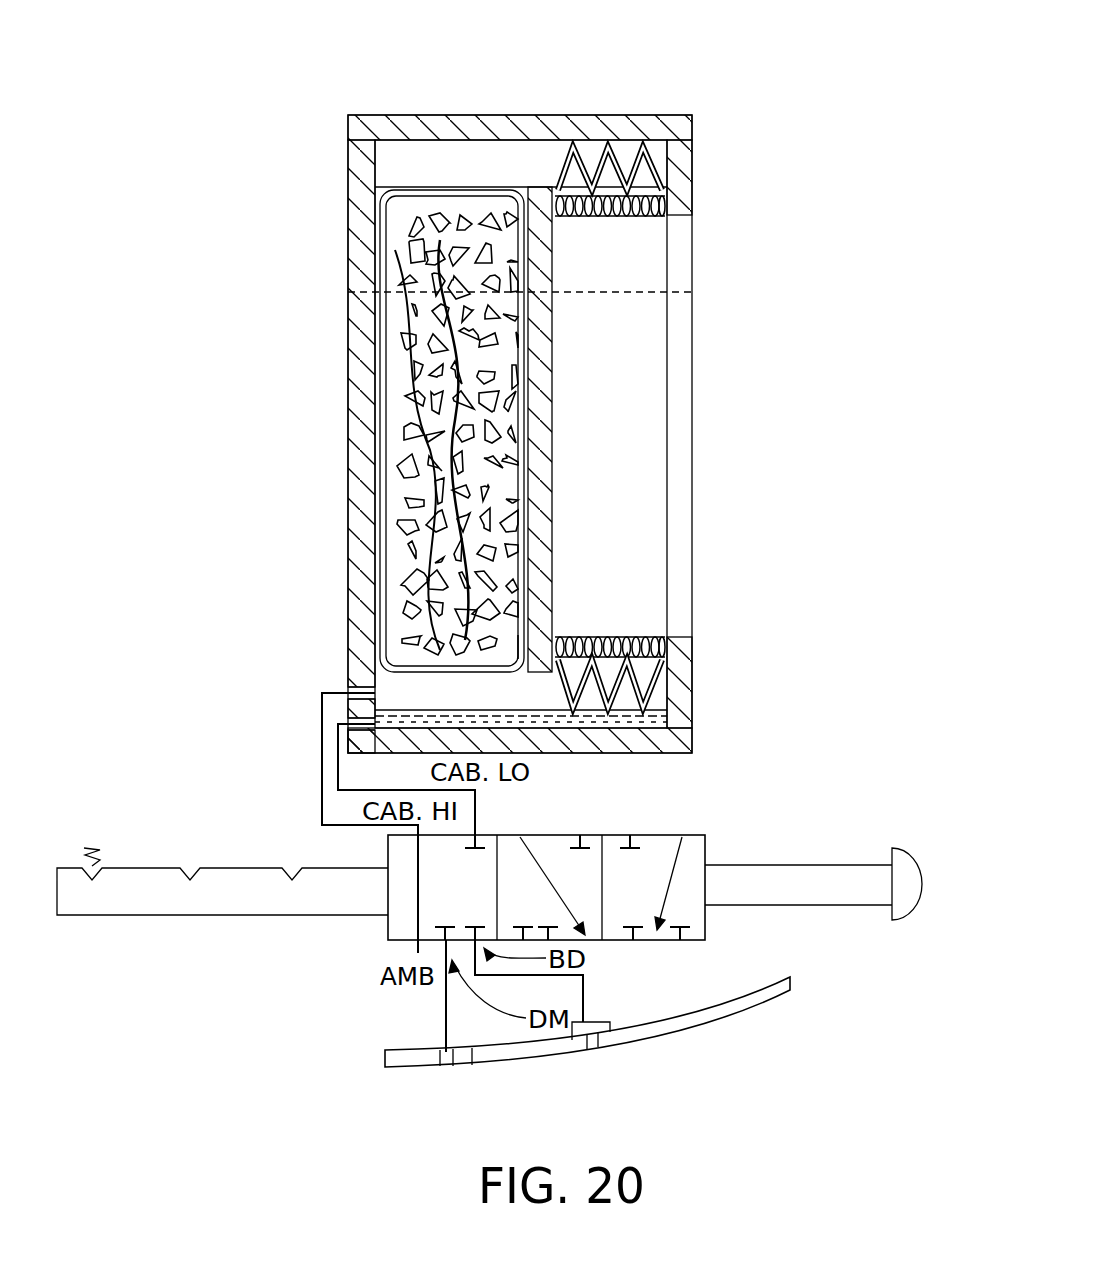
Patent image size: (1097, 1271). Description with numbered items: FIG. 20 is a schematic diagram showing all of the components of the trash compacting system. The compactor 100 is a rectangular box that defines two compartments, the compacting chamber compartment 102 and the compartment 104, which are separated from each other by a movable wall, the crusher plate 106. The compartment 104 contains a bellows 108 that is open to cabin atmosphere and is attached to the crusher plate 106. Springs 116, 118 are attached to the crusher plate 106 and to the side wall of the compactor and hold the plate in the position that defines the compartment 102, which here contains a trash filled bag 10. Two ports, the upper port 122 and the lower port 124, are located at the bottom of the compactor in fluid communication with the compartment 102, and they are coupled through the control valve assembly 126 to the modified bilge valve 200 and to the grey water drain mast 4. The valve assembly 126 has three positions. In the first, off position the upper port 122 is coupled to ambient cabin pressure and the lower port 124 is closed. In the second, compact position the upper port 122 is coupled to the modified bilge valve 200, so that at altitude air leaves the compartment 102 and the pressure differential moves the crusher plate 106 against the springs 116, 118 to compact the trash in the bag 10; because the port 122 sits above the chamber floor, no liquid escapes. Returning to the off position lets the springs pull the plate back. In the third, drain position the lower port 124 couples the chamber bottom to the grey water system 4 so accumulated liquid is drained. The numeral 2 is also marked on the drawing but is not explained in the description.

The compactor 100 is at (562, 108).
The compartment 102 is at (521, 200).
The trash filled bag 10 is at (418, 272).
The compartment 104 is at (636, 404).
The movable wall (crusher plate) 106 is at (556, 268).
The bellows 108 is at (653, 165).
The spring 116 is at (640, 214).
The spring 118 is at (646, 640).
The upper port 122 is at (350, 683).
The lower port 124 is at (352, 724).
The control valve assembly 126 is at (706, 835).
The circuit board 2 is at (762, 1012).
The modified bilge valve 200 is at (600, 1058).
The grey water drain mast 4 is at (440, 1070).